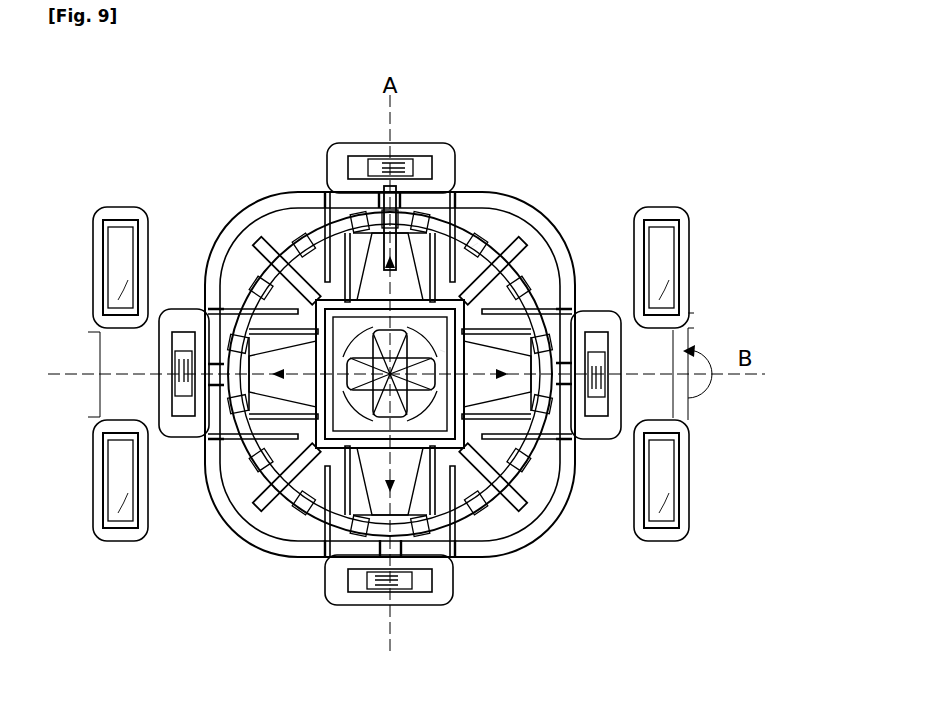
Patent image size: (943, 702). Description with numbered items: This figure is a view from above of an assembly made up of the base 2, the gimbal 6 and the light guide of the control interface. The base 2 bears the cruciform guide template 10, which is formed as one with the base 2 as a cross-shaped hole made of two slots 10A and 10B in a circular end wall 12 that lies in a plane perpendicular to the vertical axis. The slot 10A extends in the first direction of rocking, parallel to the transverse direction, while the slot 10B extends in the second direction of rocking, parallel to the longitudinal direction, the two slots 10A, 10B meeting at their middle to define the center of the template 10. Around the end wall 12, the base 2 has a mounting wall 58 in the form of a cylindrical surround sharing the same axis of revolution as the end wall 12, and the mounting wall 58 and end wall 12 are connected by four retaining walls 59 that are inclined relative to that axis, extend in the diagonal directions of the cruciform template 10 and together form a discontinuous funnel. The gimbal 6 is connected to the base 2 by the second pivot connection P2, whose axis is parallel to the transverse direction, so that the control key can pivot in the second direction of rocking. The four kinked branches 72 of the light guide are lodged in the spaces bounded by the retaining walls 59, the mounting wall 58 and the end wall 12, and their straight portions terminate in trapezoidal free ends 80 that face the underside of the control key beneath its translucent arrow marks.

The base 2 is at (714, 262).
The gimbal 6 is at (517, 537).
The cruciform guide template 10 is at (672, 128).
The slot 10A is at (470, 330).
The slot 10B is at (440, 352).
The end wall 12 is at (275, 318).
The mounting wall 58 is at (523, 463).
The retaining walls 59 is at (340, 300).
The kinked branches 72 is at (285, 430).
The free ends 80 is at (320, 392).
The second pivot connection P2 is at (400, 225).